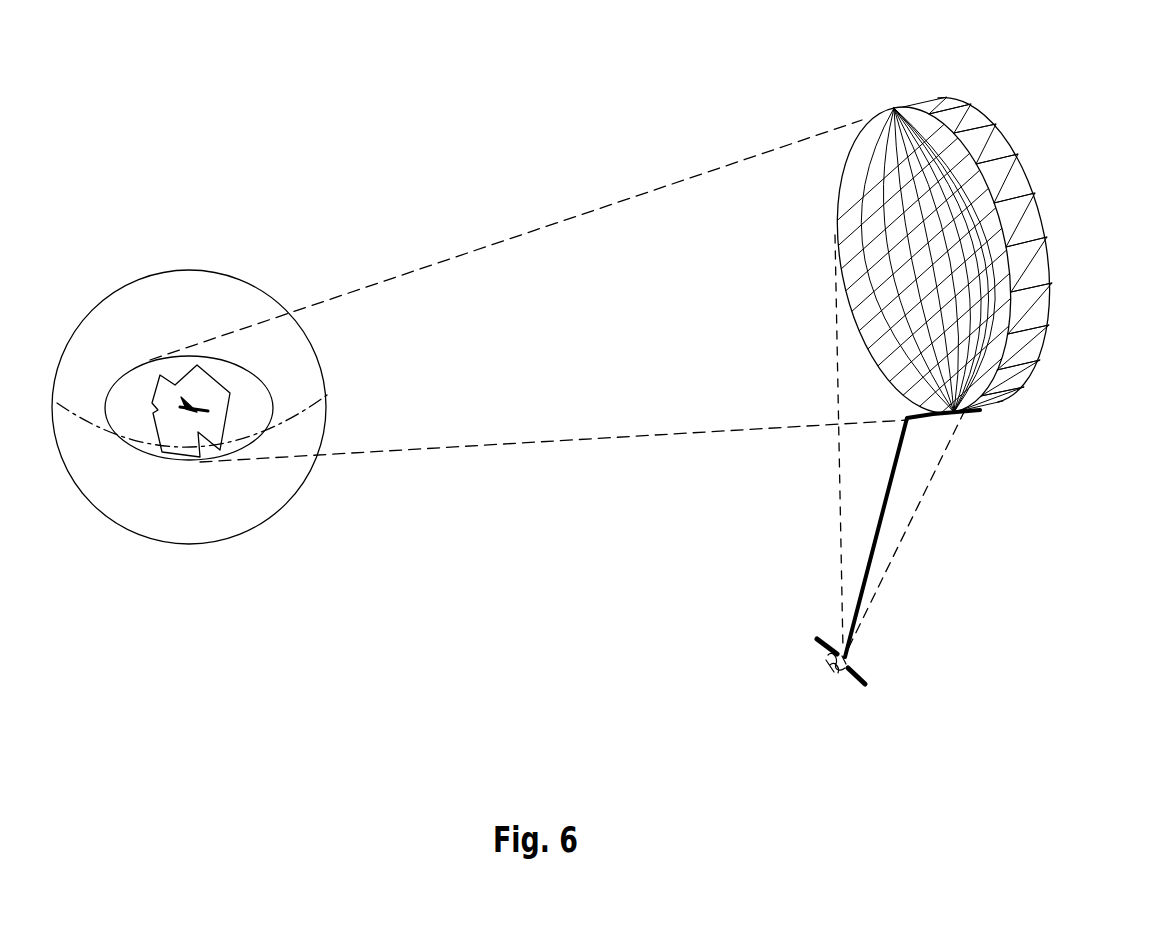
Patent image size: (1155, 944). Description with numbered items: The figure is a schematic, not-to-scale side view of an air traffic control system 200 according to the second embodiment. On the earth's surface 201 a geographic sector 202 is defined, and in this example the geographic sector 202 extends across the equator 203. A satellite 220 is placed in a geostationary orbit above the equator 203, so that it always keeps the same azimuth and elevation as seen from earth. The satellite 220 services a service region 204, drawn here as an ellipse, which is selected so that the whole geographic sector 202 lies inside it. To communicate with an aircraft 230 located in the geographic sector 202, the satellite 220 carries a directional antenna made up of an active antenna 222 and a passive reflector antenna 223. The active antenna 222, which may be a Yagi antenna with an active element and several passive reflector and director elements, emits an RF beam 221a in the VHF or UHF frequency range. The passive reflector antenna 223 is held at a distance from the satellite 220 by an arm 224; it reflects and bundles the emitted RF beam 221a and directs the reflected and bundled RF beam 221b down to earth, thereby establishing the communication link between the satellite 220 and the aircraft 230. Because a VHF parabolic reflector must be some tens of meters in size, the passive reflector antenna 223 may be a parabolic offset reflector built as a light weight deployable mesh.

The air traffic control system 200 is at (439, 158).
The earth's surface 201 is at (233, 520).
The geographic sector 202 is at (163, 395).
The equator 203 is at (90, 420).
The service region 204 is at (140, 460).
The aircraft 230 is at (195, 403).
The satellite 220 is at (867, 667).
The RF beam 221a is at (870, 463).
The reflected and bundled RF beam 221b is at (545, 415).
The active antenna 222 is at (830, 636).
The passive reflector antenna 223 is at (997, 138).
The arm 224 is at (890, 497).